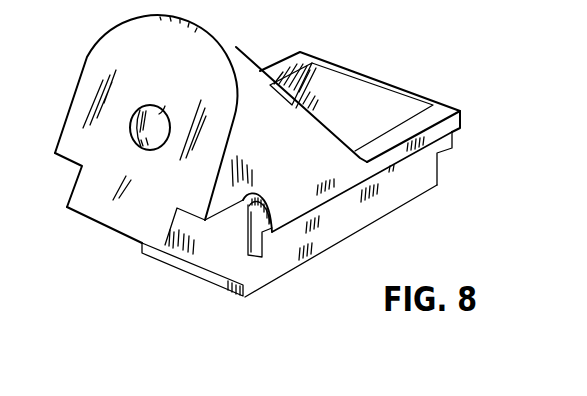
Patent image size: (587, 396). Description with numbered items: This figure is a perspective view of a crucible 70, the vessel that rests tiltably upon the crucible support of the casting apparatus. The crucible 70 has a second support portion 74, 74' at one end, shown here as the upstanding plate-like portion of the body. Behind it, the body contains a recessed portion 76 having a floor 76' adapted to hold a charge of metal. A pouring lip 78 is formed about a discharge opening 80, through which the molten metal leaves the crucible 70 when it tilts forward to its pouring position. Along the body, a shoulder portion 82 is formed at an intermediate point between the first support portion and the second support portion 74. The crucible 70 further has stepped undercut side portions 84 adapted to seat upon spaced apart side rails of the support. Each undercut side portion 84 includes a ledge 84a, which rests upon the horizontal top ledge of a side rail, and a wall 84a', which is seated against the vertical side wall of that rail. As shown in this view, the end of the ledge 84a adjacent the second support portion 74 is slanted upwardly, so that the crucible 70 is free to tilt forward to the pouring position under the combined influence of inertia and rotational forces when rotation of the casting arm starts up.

The crucible 70 is at (292, 268).
The second support portion 74 is at (153, 117).
The second support portion 74' is at (136, 252).
The recessed portion 76 is at (351, 97).
The floor 76' is at (360, 107).
The pouring lip 78 is at (140, 146).
The discharge opening 80 is at (159, 113).
The shoulder portion 82 is at (212, 275).
The stepped undercut side portions 84 is at (340, 200).
The ledge 84a is at (250, 274).
The wall 84a' is at (388, 196).